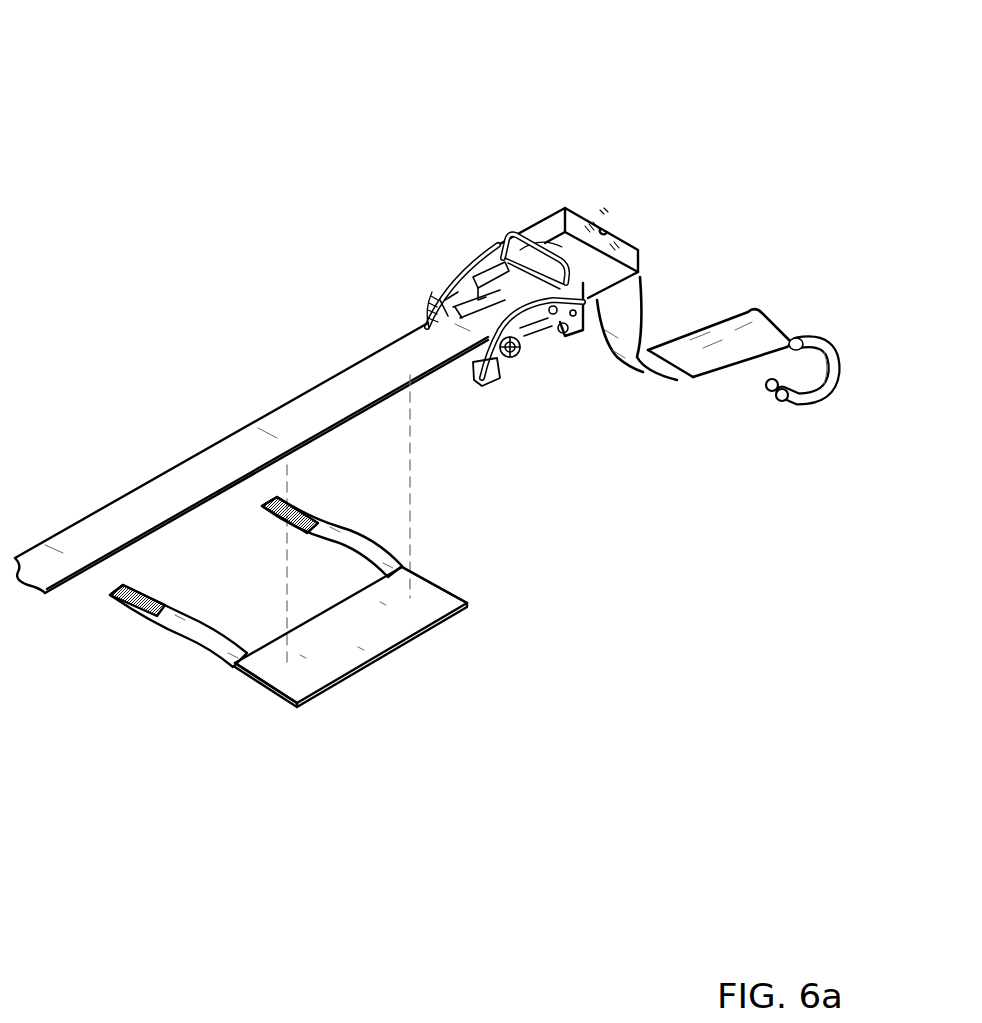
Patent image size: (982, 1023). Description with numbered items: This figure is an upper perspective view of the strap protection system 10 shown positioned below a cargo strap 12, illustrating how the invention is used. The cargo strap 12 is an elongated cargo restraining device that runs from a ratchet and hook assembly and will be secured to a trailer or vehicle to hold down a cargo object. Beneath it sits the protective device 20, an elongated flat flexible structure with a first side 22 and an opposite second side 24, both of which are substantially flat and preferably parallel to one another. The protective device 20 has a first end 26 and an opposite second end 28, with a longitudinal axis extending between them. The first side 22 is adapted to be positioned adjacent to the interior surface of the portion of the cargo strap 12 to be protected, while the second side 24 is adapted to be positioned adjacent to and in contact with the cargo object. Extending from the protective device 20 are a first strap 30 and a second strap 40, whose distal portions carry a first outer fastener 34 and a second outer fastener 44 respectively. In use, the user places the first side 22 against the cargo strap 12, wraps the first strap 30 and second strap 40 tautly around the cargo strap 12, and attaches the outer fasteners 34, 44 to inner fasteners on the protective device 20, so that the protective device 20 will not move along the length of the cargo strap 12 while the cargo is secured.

The strap protection system 10 is at (192, 118).
The cargo strap 12 is at (277, 403).
The protective device 20 is at (340, 675).
The first side 22 is at (397, 622).
The second side 24 is at (327, 688).
The first end 26 is at (437, 588).
The second end 28 is at (248, 680).
The first strap 30 is at (332, 524).
The first outer fastener 34 is at (295, 514).
The second strap 40 is at (153, 638).
The second outer fastener 44 is at (130, 603).